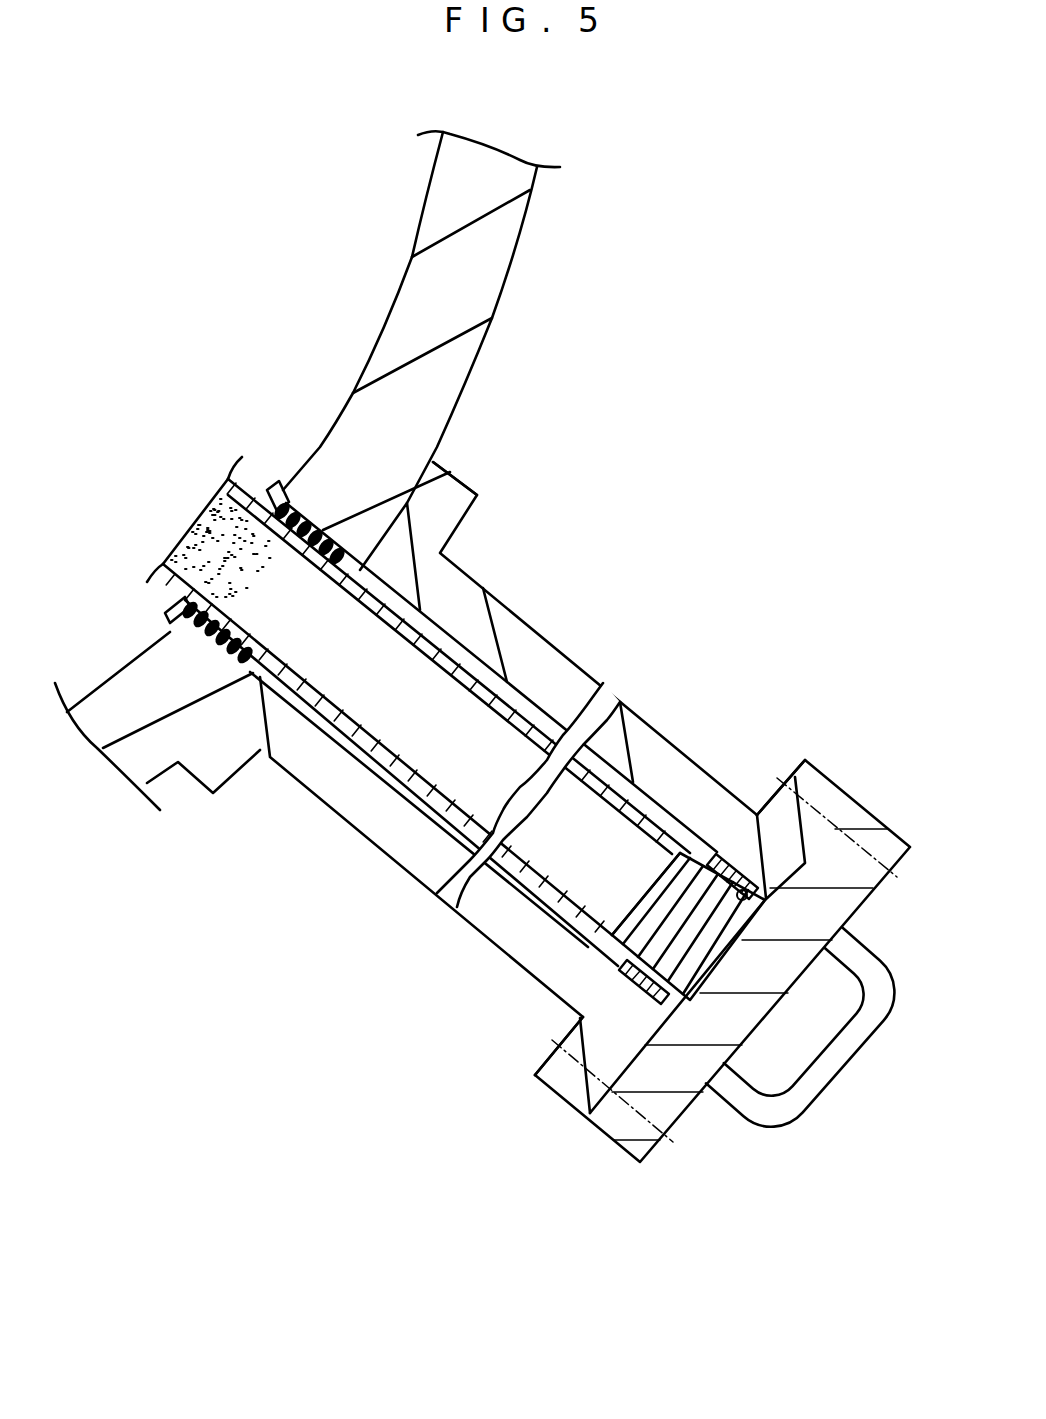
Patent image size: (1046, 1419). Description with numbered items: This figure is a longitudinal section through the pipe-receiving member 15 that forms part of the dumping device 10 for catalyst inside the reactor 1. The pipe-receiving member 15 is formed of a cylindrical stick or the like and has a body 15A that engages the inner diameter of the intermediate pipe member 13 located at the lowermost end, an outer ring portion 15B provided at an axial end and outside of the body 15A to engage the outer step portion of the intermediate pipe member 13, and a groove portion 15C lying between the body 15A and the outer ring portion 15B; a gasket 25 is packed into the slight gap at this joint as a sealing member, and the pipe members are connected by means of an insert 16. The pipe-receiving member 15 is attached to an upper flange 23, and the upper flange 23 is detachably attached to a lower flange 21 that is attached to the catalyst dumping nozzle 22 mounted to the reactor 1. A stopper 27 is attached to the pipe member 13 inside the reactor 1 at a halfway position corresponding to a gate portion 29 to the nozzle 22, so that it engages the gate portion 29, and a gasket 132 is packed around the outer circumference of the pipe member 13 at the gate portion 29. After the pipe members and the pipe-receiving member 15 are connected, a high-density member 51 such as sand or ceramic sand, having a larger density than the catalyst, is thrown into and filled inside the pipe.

The reactor 1 is at (517, 252).
The dumping device 10 is at (224, 425).
The intermediate pipe member 13 is at (440, 624).
The pipe-receiving member 15 is at (660, 870).
The body 15A is at (645, 922).
The outer ring portion 15B is at (622, 970).
The groove portion 15C is at (722, 935).
The insert 16 is at (703, 930).
The lower flange 21 is at (817, 785).
The catalyst dumping nozzle 22 is at (557, 645).
The upper flange 23 is at (877, 845).
The gasket 25 is at (719, 1063).
The stopper 27 is at (275, 480).
The gate portion 29 is at (163, 637).
The high-density member 51 is at (222, 535).
The gasket 132 is at (228, 636).